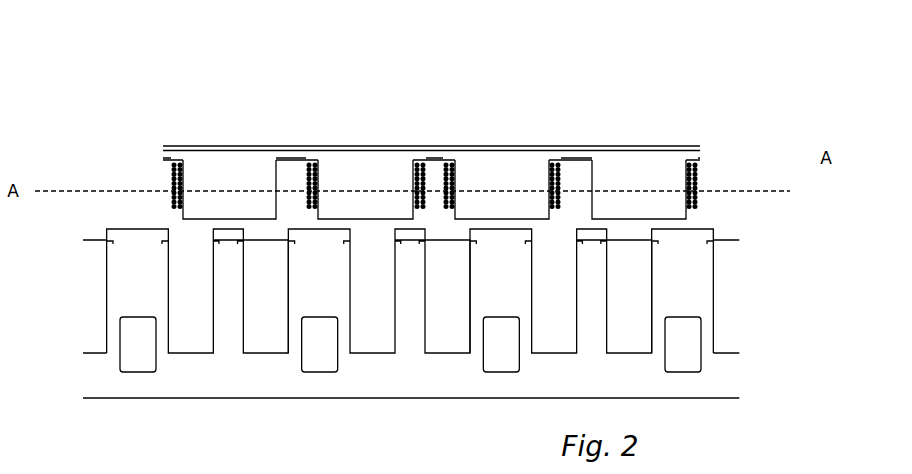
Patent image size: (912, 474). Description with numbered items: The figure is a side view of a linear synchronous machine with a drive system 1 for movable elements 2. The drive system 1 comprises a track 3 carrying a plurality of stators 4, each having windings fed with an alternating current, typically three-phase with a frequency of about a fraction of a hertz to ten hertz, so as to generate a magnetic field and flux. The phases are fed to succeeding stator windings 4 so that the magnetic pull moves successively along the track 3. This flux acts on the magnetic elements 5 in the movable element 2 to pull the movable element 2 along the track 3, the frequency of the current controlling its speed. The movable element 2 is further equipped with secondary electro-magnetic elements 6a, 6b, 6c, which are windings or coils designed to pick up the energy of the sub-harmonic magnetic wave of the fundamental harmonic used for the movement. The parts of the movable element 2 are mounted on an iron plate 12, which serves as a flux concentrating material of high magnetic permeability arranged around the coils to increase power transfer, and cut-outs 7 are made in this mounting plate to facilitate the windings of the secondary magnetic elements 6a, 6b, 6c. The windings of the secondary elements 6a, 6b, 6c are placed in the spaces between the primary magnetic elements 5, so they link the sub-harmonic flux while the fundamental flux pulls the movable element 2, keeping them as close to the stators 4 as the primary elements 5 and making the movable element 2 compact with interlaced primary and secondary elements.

The drive system 1 is at (113, 128).
The movable element 2 is at (272, 76).
The track 3 is at (86, 304).
The stator 4 is at (317, 385).
The magnetic element 5 is at (236, 204).
The secondary electro-magnetic element 6a is at (183, 158).
The secondary electro-magnetic element 6b is at (310, 158).
The secondary electro-magnetic element 6c is at (447, 158).
The cut-outs 7 is at (165, 158).
The iron plate 12 is at (600, 158).